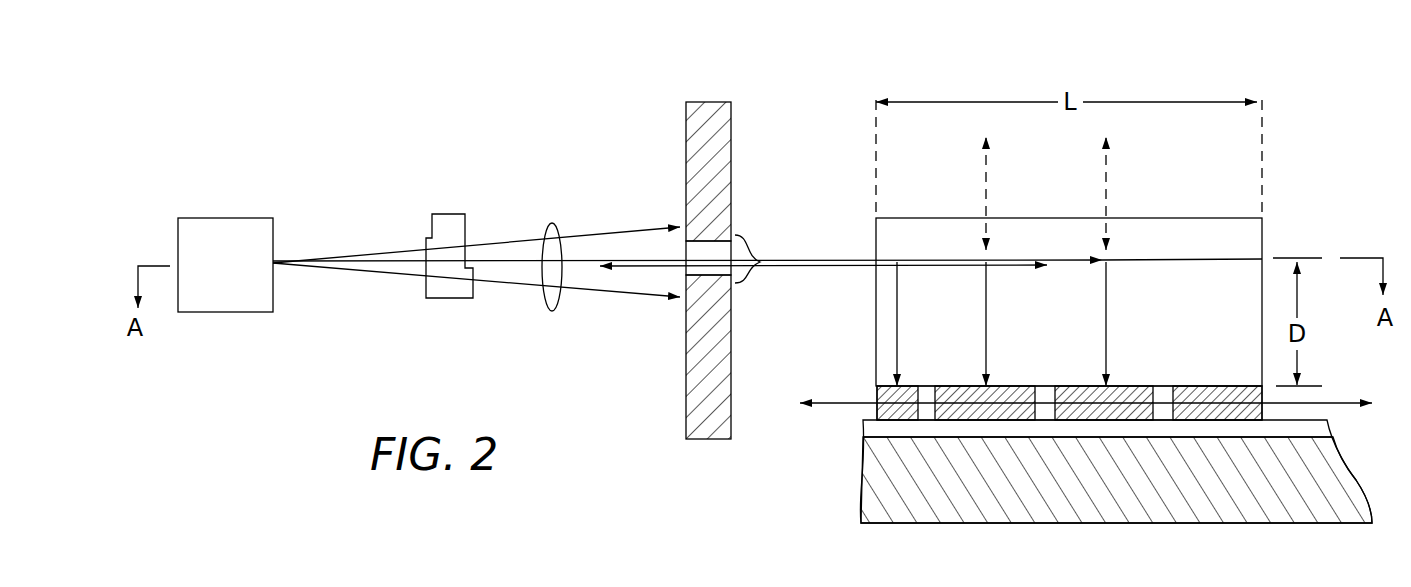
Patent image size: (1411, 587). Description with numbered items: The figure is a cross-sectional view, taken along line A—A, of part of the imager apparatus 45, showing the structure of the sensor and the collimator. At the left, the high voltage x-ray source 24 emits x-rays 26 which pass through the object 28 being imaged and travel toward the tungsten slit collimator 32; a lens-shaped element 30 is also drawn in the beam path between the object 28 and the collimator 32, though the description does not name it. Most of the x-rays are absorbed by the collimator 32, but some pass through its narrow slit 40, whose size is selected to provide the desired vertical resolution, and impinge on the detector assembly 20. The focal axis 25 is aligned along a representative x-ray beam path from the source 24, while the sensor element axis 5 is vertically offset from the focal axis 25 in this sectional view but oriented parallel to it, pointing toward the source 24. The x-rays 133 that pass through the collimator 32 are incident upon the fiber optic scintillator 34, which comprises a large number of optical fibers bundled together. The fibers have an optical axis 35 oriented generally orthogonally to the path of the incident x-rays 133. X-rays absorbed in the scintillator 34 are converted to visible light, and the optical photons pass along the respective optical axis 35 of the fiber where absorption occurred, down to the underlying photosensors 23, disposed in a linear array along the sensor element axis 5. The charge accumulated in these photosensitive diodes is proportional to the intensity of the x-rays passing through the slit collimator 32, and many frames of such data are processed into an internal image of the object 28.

The imager apparatus 45 is at (395, 130).
The x-ray source 24 is at (240, 312).
The x-rays 26 is at (340, 263).
The object 28 is at (463, 298).
The lens 30 is at (553, 310).
The slit collimator 32 is at (713, 102).
The slit 40 is at (760, 263).
The focal axis 25 is at (840, 265).
The x-rays passing through collimator 133 is at (820, 260).
The detector assembly 20 is at (1210, 198).
The fiber optic scintillator 34 is at (915, 230).
The optical axis 35 is at (1100, 175).
The sensor element axis 5 is at (833, 403).
The photosensors 23 is at (1203, 405).